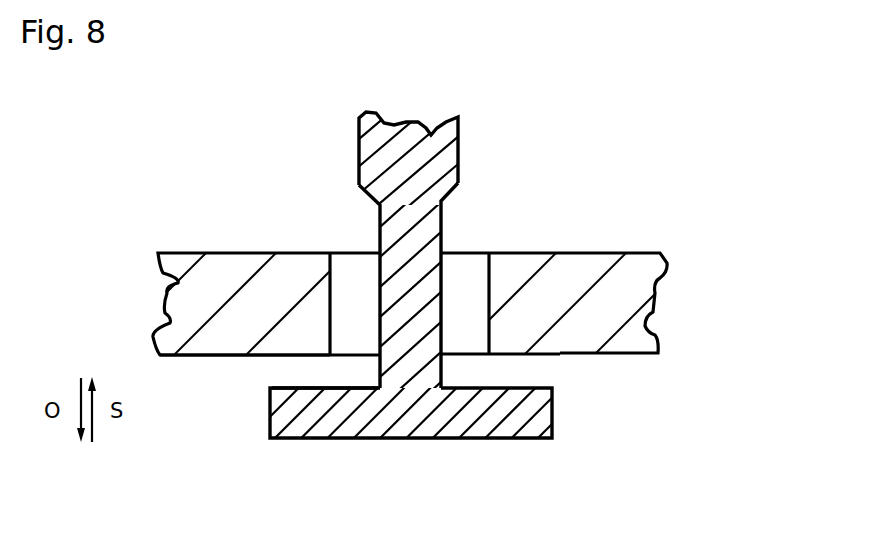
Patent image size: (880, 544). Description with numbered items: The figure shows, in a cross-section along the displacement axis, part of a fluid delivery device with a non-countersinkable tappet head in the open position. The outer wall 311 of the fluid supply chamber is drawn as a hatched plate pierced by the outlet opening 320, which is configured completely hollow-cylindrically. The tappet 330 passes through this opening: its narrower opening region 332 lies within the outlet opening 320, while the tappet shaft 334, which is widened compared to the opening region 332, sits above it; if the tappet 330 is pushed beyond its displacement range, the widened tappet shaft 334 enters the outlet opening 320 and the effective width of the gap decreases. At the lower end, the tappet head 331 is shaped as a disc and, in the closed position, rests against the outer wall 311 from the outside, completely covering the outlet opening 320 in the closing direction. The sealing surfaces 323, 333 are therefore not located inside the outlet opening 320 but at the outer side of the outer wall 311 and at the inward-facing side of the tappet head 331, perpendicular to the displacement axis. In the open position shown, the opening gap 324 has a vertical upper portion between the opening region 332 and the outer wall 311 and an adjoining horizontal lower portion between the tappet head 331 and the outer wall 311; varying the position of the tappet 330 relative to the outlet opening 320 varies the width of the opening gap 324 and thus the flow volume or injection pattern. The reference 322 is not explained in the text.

The outer wall 311 is at (608, 262).
The outlet opening 320 is at (474, 291).
The through hole 322 is at (462, 266).
The sealing surface 323 is at (283, 357).
The opening gap 324 is at (470, 360).
The tappet 330 is at (400, 272).
The tappet head 331 is at (468, 417).
The opening region 332 is at (393, 232).
The sealing surface 333 is at (313, 390).
The tappet shaft 334 is at (447, 121).